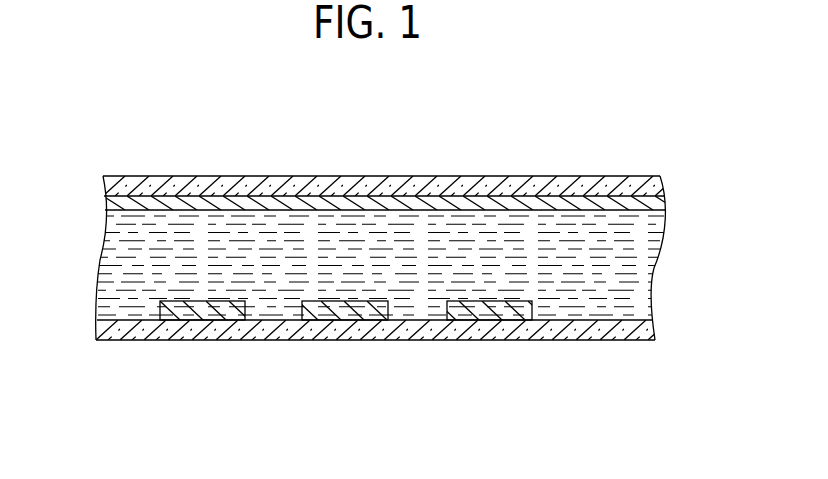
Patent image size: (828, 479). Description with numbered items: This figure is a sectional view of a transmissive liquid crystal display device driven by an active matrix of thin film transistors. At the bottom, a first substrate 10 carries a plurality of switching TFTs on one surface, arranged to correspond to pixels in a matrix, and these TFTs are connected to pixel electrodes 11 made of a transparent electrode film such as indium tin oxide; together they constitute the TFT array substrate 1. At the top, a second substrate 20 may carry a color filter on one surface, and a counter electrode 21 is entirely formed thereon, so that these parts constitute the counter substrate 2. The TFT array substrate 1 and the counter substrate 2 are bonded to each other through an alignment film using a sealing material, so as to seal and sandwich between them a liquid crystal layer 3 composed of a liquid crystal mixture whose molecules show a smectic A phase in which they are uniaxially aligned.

The TFT array substrate 1 is at (380, 366).
The first substrate 10 is at (343, 387).
The pixel electrodes 11 is at (333, 315).
The counter substrate 2 is at (380, 143).
The second substrate 20 is at (358, 186).
The counter electrode 21 is at (343, 120).
The liquid crystal layer 3 is at (508, 225).